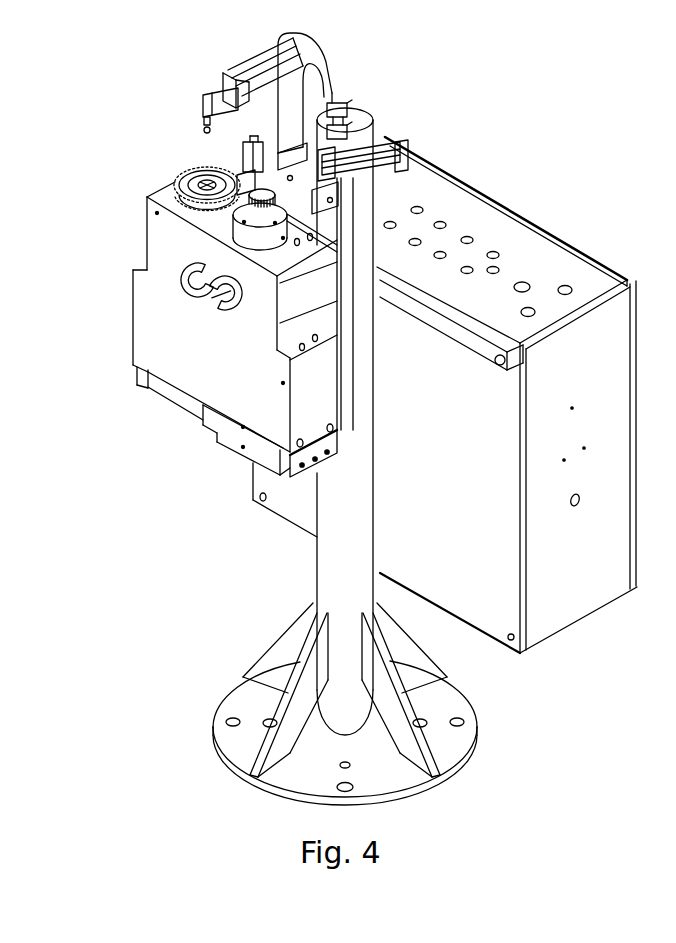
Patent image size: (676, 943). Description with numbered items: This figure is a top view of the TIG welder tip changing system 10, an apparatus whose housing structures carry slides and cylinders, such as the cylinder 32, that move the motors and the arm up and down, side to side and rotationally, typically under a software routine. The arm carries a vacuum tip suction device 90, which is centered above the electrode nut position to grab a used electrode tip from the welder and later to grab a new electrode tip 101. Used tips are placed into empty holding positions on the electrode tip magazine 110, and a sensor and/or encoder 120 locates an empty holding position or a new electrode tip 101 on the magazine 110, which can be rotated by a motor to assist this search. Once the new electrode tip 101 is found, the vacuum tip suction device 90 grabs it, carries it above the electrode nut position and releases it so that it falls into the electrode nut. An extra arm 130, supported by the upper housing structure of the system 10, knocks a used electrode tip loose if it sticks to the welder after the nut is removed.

The present invention 10 is at (543, 192).
The cylinder 32 is at (245, 55).
The vacuum tip suction device 90 is at (200, 118).
The new electrode tip 101 is at (187, 197).
The electrode tip magazine 110 is at (187, 180).
The sensor and/or encoder 120 is at (243, 155).
The extra arm 130 is at (373, 158).